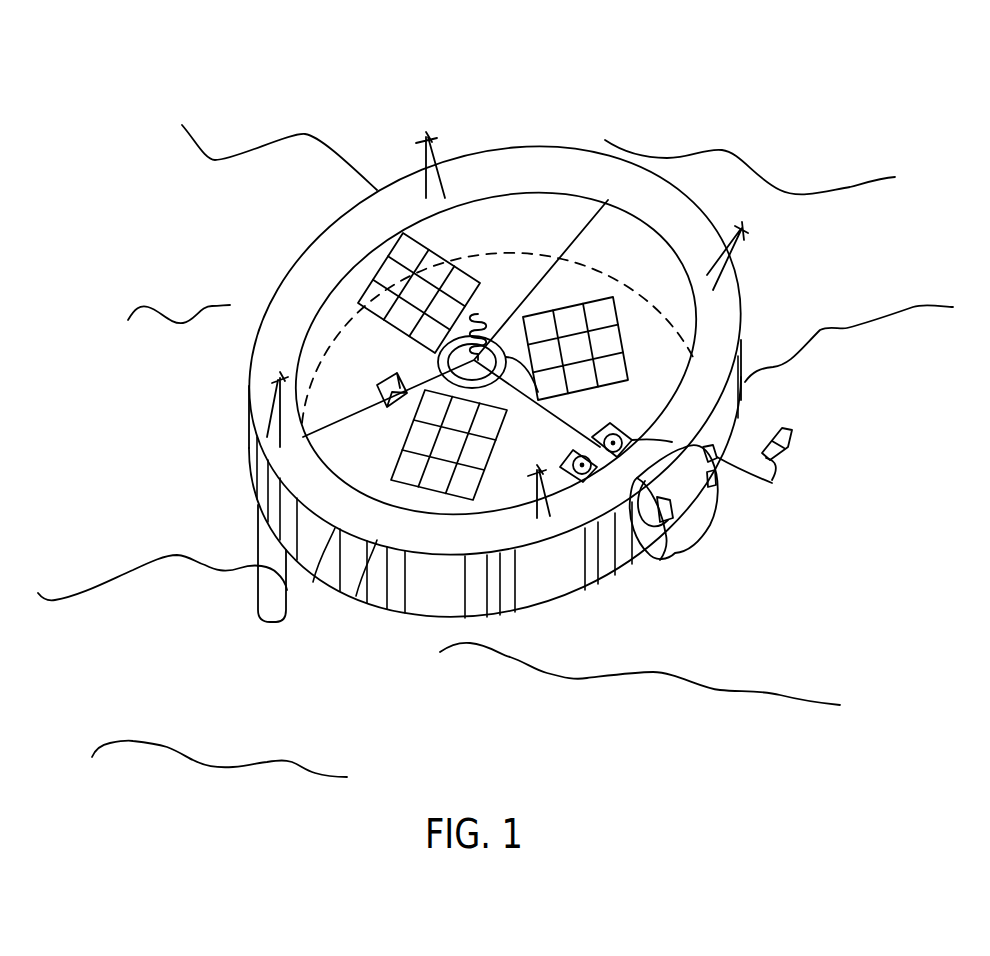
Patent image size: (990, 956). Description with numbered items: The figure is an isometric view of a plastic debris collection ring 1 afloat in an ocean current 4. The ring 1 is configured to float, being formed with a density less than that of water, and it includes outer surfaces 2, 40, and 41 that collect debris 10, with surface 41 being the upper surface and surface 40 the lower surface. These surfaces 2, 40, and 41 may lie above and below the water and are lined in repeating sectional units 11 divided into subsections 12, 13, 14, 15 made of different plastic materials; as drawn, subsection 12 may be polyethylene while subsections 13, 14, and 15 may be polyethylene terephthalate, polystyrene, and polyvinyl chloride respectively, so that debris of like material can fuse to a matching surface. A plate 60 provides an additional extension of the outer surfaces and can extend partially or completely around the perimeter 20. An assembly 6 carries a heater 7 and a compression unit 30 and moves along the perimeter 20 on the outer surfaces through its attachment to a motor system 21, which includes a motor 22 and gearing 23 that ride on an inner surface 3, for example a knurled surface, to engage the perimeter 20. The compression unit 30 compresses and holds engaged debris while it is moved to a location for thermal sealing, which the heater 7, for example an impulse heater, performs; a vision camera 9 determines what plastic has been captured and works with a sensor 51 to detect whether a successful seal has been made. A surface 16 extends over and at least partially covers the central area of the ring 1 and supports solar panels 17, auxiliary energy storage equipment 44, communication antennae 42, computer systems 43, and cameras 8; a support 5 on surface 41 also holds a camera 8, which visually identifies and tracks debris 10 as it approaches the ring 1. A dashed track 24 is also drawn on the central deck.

The plastic debris collection ring 1 is at (814, 142).
The outer surface 2 is at (739, 272).
The inner surface 3 is at (496, 192).
The ocean current 4 is at (947, 255).
The support 5 is at (297, 272).
The assembly 6 is at (700, 523).
The heater 7 is at (663, 508).
The camera 8 is at (428, 137).
The vision camera 9 is at (748, 497).
The debris 10 is at (792, 429).
The sectional unit 11 is at (527, 607).
The subsection 12 is at (523, 600).
The subsection 13 is at (593, 572).
The subsection 14 is at (607, 568).
The subsection 15 is at (627, 558).
The surface 16 is at (340, 387).
The solar panels 17 is at (480, 284).
The perimeter 20 is at (313, 582).
The motor system 21 is at (610, 427).
The motor 22 is at (563, 423).
The gearing 23 is at (567, 462).
The rail track 24 is at (657, 248).
The compression unit 30 is at (698, 447).
The outer surface 40 is at (403, 612).
The outer surface 41 is at (356, 596).
The communication antennae 42 is at (480, 316).
The computer systems 43 is at (540, 392).
The energy storage equipment 44 is at (387, 410).
The sensor 51 is at (668, 466).
The plate 60 is at (262, 541).